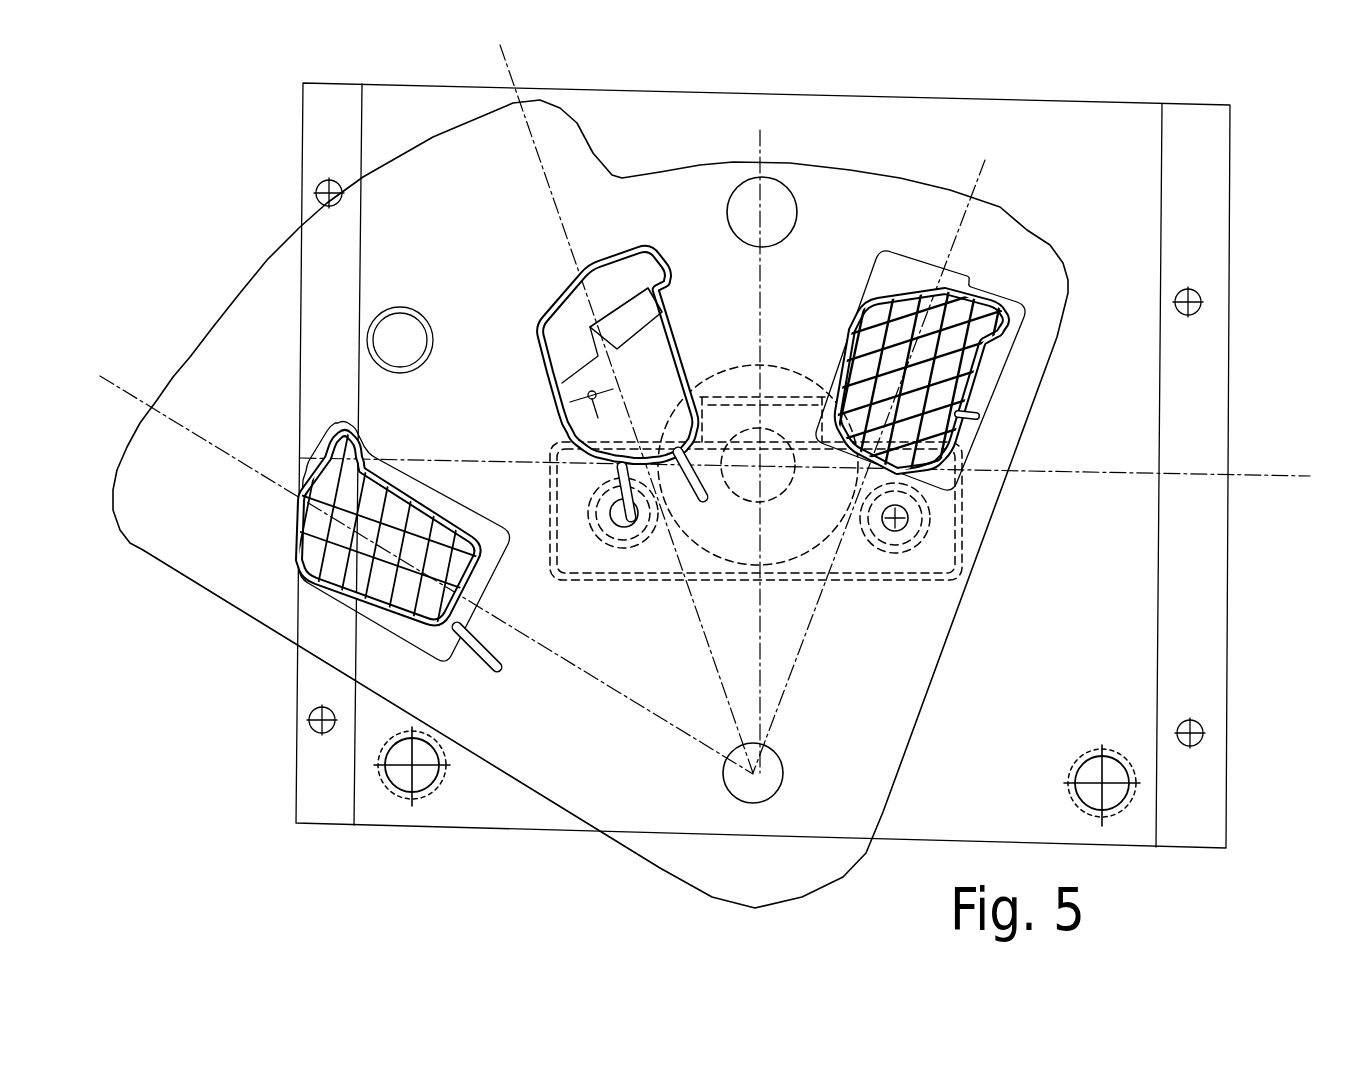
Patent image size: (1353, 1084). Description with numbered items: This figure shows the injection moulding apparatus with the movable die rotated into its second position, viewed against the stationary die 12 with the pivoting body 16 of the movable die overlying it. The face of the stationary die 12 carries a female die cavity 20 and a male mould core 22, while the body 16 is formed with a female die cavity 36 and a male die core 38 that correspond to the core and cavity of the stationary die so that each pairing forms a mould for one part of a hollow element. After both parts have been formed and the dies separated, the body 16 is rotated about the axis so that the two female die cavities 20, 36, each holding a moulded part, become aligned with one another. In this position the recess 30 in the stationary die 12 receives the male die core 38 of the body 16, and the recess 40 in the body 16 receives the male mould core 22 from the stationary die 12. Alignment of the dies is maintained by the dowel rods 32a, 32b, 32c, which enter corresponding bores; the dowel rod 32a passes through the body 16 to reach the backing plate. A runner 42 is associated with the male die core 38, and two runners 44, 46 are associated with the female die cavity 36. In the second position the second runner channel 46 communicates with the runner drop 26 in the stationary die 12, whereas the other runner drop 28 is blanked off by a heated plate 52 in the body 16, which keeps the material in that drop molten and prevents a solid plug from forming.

The stationary die 12 is at (170, 289).
The pivoting body 16 is at (190, 387).
The female die cavity 20 is at (587, 318).
The male mould core 22 is at (946, 337).
The runner drop 26 is at (610, 522).
The runner drop 28 is at (903, 522).
The recess 30 is at (366, 546).
The dowel rod 32a is at (782, 200).
The dowel rod 32b is at (423, 777).
The dowel rod 32c is at (1093, 745).
The female die cavity 36 is at (560, 320).
The male die core 38 is at (327, 450).
The recess 40 is at (980, 388).
The runner 42 is at (498, 668).
The runner 44 is at (690, 500).
The runner 46 is at (650, 540).
The heated plate 52 is at (875, 545).